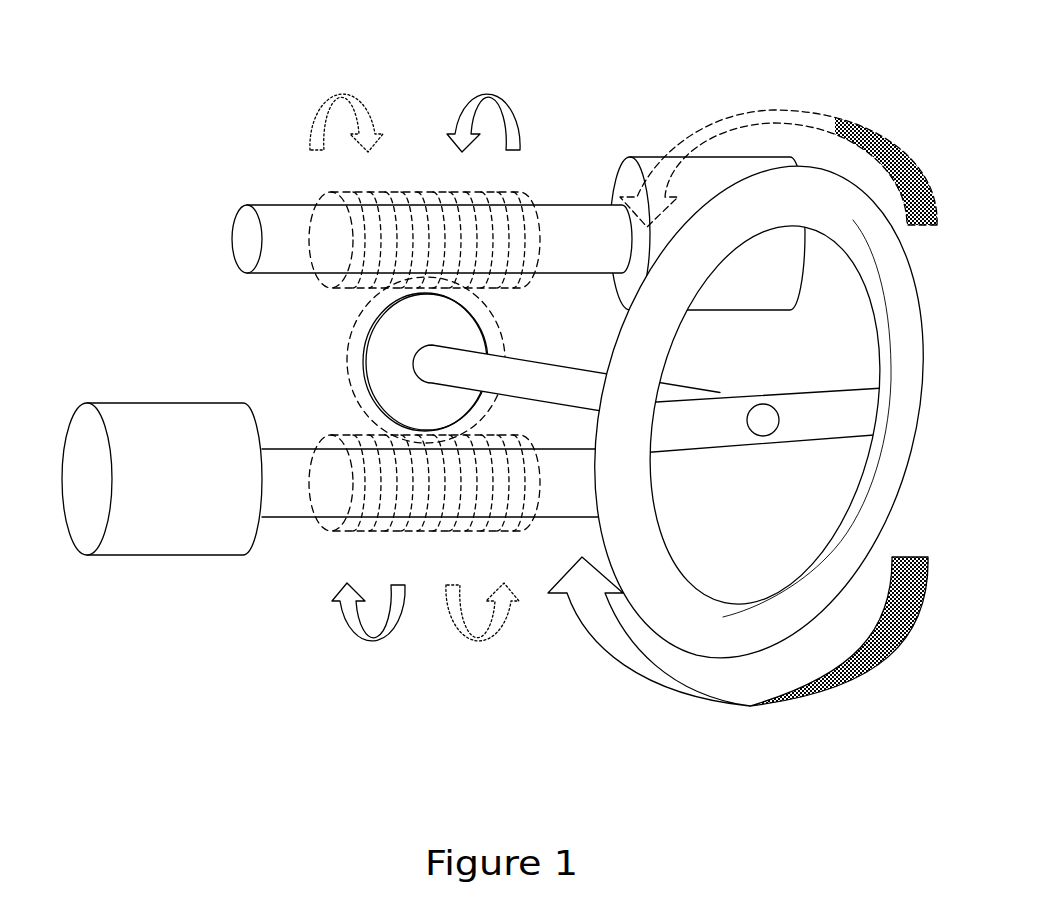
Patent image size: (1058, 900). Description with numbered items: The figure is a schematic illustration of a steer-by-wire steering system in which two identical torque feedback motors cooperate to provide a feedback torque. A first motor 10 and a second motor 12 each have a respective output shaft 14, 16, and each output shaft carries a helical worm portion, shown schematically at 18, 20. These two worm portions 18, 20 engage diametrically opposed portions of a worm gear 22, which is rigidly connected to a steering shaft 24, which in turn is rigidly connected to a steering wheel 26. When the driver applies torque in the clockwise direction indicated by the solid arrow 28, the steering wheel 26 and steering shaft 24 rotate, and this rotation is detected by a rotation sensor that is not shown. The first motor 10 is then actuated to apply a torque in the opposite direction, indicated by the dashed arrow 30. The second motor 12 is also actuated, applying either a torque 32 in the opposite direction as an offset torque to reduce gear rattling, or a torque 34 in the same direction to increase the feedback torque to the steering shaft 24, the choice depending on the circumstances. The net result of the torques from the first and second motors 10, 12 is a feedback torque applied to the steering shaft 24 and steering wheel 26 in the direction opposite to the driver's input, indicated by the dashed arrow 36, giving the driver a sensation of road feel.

The first torque feedback motor 10 is at (614, 172).
The second torque feedback motor 12 is at (122, 546).
The output shaft 14 is at (280, 226).
The output shaft 16 is at (278, 465).
The helical worm portion 18 is at (413, 192).
The helical worm portion 20 is at (323, 530).
The worm gear 22 is at (355, 342).
The steering shaft 24 is at (532, 377).
The steering wheel 26 is at (857, 534).
The solid arrow 28 is at (833, 693).
The dashed arrow 30 is at (332, 93).
The torque 32 is at (355, 628).
The torque 34 is at (458, 628).
The dashed arrow 36 is at (700, 128).